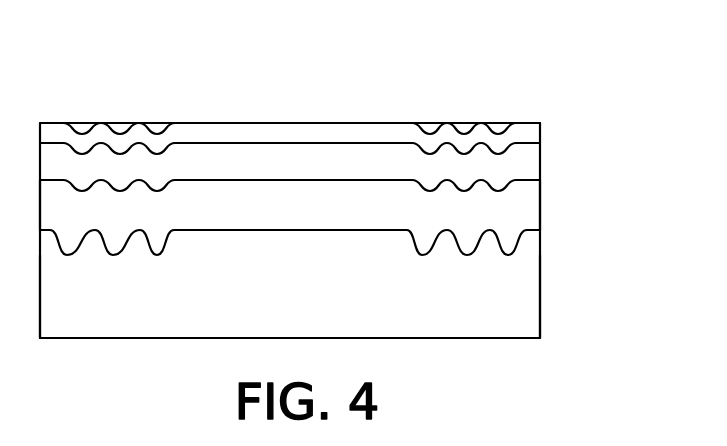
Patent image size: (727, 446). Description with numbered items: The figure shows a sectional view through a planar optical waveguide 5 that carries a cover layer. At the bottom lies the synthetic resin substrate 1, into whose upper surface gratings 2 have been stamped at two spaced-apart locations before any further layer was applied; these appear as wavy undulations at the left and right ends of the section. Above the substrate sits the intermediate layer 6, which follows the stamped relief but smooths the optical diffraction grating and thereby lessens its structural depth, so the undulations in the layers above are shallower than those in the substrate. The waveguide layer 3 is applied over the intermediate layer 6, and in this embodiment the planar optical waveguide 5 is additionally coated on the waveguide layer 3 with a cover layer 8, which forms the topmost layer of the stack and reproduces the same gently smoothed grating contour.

The planar optical waveguide 5 is at (468, 93).
The cover layer 8 is at (515, 133).
The waveguide layer 3 is at (515, 162).
The intermediate layer 6 is at (518, 205).
The gratings 2 is at (523, 242).
The synthetic resin substrate 1 is at (507, 288).